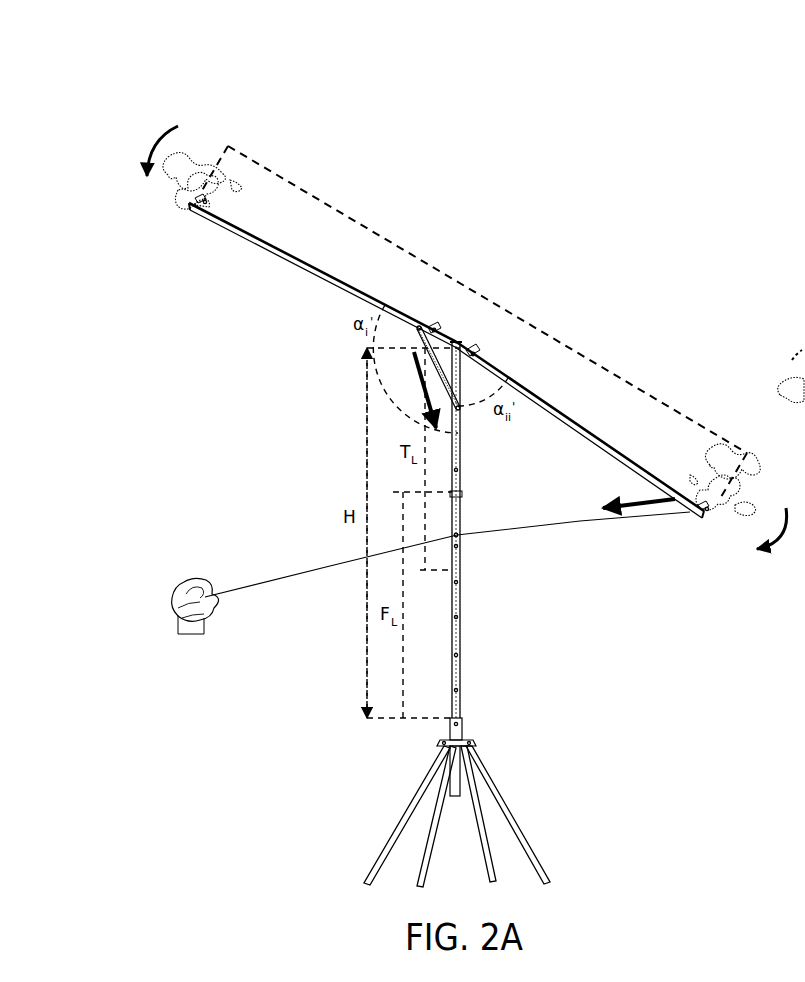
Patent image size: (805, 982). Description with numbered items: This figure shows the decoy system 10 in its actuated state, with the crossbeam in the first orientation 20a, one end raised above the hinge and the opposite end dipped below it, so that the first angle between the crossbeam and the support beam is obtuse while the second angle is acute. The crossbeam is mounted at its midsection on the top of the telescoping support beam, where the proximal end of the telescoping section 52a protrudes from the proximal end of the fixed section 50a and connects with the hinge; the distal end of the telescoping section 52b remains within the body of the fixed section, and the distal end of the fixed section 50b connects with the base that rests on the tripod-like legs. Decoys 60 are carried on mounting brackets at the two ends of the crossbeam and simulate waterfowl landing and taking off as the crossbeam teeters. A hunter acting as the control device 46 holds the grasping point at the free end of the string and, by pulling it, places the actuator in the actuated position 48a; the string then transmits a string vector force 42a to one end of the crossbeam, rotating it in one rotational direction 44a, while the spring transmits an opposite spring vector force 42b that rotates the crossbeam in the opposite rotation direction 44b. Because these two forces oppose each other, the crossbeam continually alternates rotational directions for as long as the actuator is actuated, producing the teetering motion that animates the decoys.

The decoy system 10 is at (273, 51).
The first orientation 20a is at (340, 158).
The string vector force 42a is at (638, 498).
The spring vector force 42b is at (428, 362).
The rotational direction 44a is at (786, 508).
The opposite rotation direction 44b is at (163, 135).
The control device 46 is at (187, 593).
The actuated position 48a is at (189, 662).
The proximal end of the fixed section 50a is at (457, 495).
The distal end of the fixed section 50b is at (458, 718).
The proximal end of the telescoping section 52a is at (460, 345).
The distal end of the telescoping section 52b is at (458, 572).
The decoys 60 is at (197, 176).